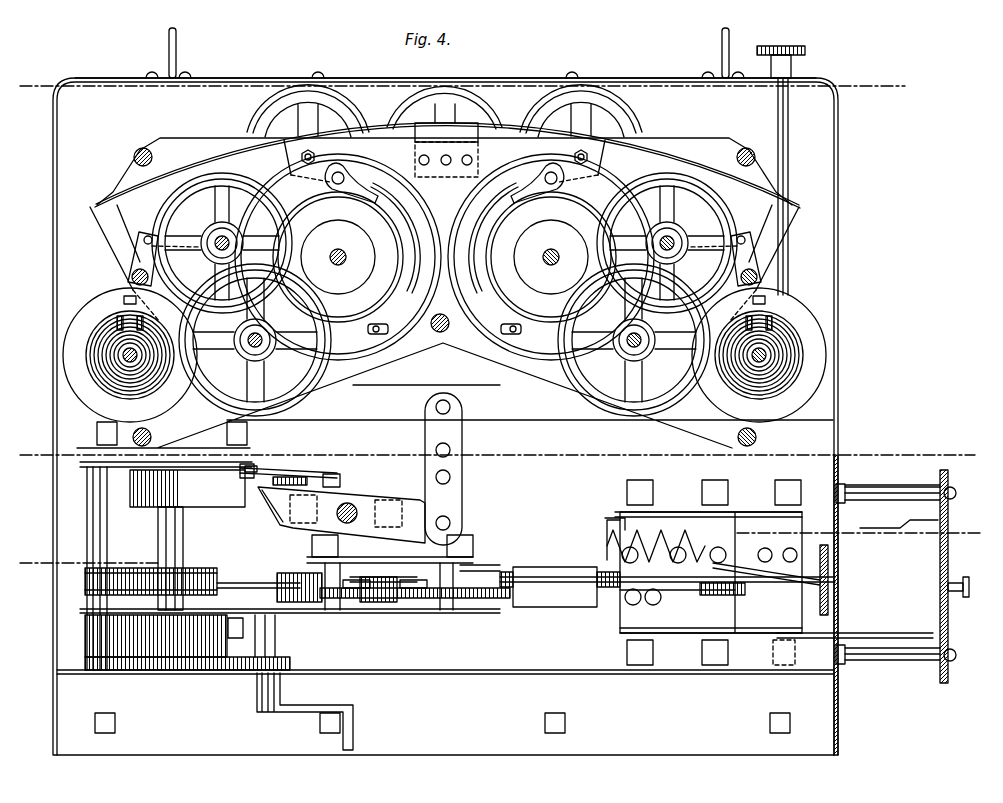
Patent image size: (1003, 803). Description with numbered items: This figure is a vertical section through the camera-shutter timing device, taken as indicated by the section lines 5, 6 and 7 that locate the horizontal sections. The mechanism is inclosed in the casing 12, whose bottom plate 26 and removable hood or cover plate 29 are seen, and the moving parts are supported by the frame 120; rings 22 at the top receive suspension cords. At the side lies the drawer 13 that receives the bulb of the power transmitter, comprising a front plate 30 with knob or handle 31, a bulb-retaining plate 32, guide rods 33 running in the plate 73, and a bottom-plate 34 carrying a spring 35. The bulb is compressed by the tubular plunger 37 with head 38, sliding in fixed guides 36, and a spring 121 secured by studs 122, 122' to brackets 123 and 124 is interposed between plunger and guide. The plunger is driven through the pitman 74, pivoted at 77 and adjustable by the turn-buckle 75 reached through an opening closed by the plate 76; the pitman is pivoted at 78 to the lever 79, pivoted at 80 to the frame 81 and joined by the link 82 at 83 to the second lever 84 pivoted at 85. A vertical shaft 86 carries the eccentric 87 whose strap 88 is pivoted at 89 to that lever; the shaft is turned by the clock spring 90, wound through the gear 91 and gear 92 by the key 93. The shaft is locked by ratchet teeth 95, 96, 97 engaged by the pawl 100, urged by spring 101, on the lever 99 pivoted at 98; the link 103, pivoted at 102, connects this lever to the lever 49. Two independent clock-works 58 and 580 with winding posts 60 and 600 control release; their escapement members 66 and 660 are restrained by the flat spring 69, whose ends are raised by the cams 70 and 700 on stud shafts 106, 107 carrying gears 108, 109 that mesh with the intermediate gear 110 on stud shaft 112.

The section line 5 is at (462, 87).
The section line 6 is at (490, 456).
The section line 7 is at (493, 550).
The casing 12 is at (428, 416).
The drawer 13 is at (892, 479).
The rings 22 is at (176, 54).
The bottom plate 26 is at (390, 676).
The hood or cover plate 29 is at (402, 72).
The front plate 30 is at (950, 516).
The knob or handle 31 is at (968, 598).
The bulb-retaining plate 32 is at (890, 522).
The guide rods 33 is at (865, 493).
The bottom-plate 34 is at (877, 632).
The spring 35 is at (777, 641).
The fixed guides 36 is at (660, 513).
The plunger 37 is at (623, 619).
The bulb-engaging knob or head 38 is at (830, 582).
The lever 49 is at (507, 420).
The clock-work 58 is at (338, 257).
The clock-work 580 is at (551, 257).
The winding post 60 is at (346, 258).
The winding post 600 is at (597, 233).
The vibrating member 66 is at (125, 268).
The vibrating member 660 is at (780, 270).
The flat spring 69 is at (200, 172).
The cam 70 is at (332, 148).
The cam 700 is at (560, 148).
The plate 73 is at (838, 708).
The connecting rod or pitman 74 is at (520, 572).
The turn-buckle 75 is at (550, 572).
The removable plate 76 is at (552, 673).
The pivot 77 is at (720, 584).
The pivot 78 is at (395, 600).
The lever 79 is at (422, 600).
The pivot 80 is at (462, 606).
The frame 81 is at (470, 563).
The link 82 is at (415, 590).
The pivot 83 is at (370, 590).
The second lever 84 is at (356, 605).
The pivot 85 is at (318, 578).
The vertical shaft 86 is at (183, 559).
The eccentric 87 is at (132, 570).
The eccentric strap 88 is at (217, 584).
The pivot 89 is at (300, 605).
The clock spring 90 is at (205, 620).
The gear 91 is at (153, 507).
The gear 92 is at (300, 663).
The key or handle 93 is at (297, 710).
The ratchet tooth 95 is at (255, 472).
The ratchet tooth 96 is at (242, 489).
The ratchet tooth 97 is at (246, 502).
The pivot 98 is at (349, 506).
The lever 99 is at (295, 535).
The pawl 100 is at (276, 477).
The spring 101 is at (315, 479).
The pivot 102 is at (463, 523).
The link 103 is at (459, 499).
The stud shaft 106 is at (305, 154).
The stud shaft 107 is at (586, 156).
The gear 108 is at (241, 126).
The gear 109 is at (646, 125).
The intermediate gear 110 is at (392, 115).
The stud shaft 112 is at (446, 165).
The frame 120 is at (113, 190).
The spring 121 is at (718, 516).
The studs 122 is at (693, 544).
The spring end 122' is at (589, 540).
The bracket 123 is at (610, 516).
The bracket 124 is at (740, 580).